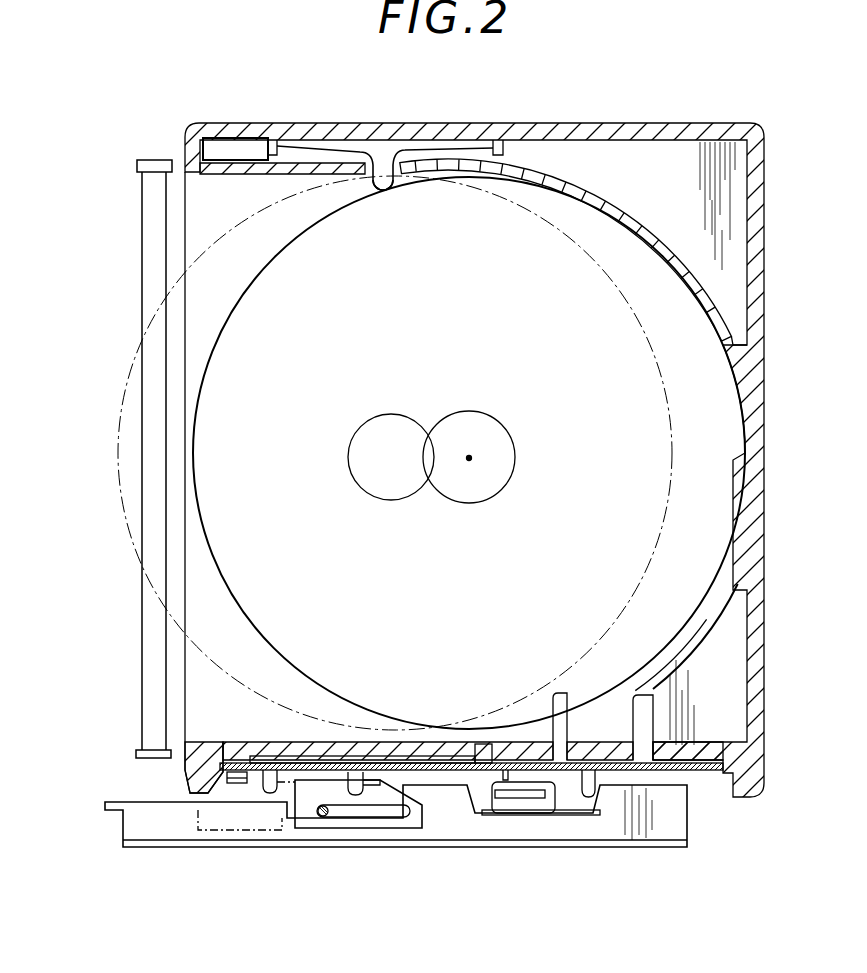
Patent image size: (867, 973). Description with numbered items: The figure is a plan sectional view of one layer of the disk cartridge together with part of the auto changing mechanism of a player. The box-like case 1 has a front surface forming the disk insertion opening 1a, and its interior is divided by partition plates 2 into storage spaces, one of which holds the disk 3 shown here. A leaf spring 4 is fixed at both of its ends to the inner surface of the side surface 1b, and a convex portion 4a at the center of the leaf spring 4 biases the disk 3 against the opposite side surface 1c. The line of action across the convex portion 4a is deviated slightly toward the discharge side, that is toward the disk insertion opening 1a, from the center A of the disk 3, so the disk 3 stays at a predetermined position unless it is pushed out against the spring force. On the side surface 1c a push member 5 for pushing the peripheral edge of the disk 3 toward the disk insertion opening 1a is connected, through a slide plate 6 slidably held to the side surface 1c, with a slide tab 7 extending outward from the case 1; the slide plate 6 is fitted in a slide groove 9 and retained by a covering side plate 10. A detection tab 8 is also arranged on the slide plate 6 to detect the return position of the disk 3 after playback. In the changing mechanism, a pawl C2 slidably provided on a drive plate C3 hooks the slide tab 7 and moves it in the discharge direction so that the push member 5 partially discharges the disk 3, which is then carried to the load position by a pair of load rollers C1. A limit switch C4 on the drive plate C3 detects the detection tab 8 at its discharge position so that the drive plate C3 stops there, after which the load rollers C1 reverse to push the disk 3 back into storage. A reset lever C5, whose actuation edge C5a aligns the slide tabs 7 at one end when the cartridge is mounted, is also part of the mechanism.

The case 1 is at (598, 121).
The disk insertion opening 1a is at (168, 530).
The side surface 1b is at (500, 123).
The side surface 1c is at (675, 762).
The partition plate 2 is at (186, 703).
The disk 3 is at (200, 388).
The leaf spring 4 is at (447, 141).
The convex portion 4a is at (384, 191).
The push member 5 is at (632, 717).
The slide plate 6 is at (487, 743).
The slide tab 7 is at (347, 780).
The detection tab 8 is at (590, 770).
The slide groove 9 is at (397, 742).
The side plate 10 is at (714, 771).
The center of the disk A is at (469, 458).
The load rollers C1 is at (155, 447).
The pawl C2 is at (376, 790).
The drive plate C3 is at (447, 830).
The limit switch C4 is at (537, 805).
The reset lever C5 is at (232, 783).
The actuation edge C5a is at (241, 783).